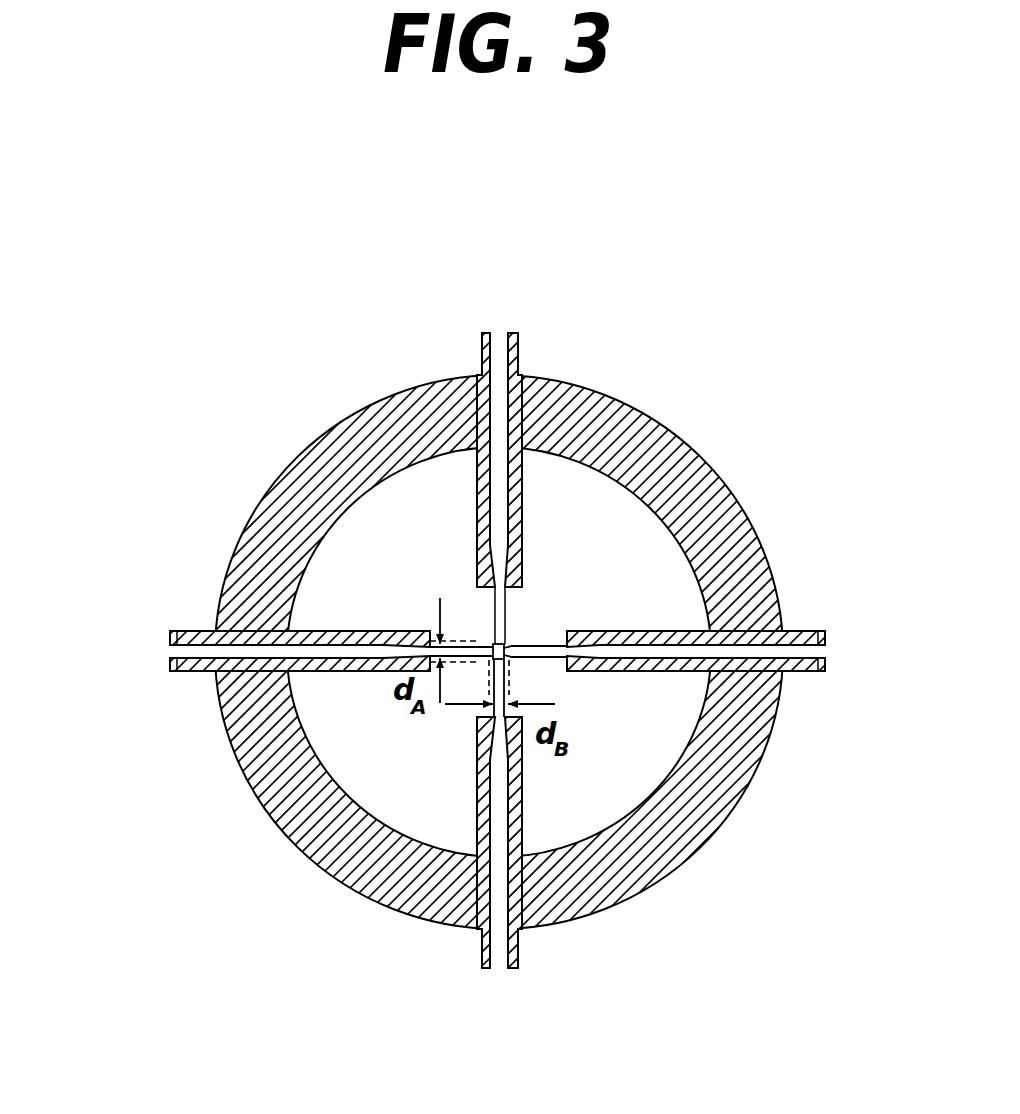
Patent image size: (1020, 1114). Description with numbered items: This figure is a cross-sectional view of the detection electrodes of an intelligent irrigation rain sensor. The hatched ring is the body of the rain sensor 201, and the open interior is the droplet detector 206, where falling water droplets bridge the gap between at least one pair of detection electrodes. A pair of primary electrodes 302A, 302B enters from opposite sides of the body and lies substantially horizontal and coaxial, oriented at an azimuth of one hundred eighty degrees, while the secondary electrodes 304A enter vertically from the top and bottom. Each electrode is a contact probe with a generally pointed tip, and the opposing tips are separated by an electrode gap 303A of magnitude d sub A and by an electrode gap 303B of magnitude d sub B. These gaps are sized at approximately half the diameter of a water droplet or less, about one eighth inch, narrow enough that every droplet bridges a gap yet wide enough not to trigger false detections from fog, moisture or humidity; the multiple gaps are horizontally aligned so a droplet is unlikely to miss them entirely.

The rain sensor body 201 is at (760, 533).
The droplet detector 206 is at (566, 563).
The primary electrode 302A is at (173, 652).
The primary electrode 302B is at (820, 650).
The electrode gap 303A is at (490, 642).
The electrode gap 303B is at (508, 646).
The secondary electrode 304A is at (497, 347).